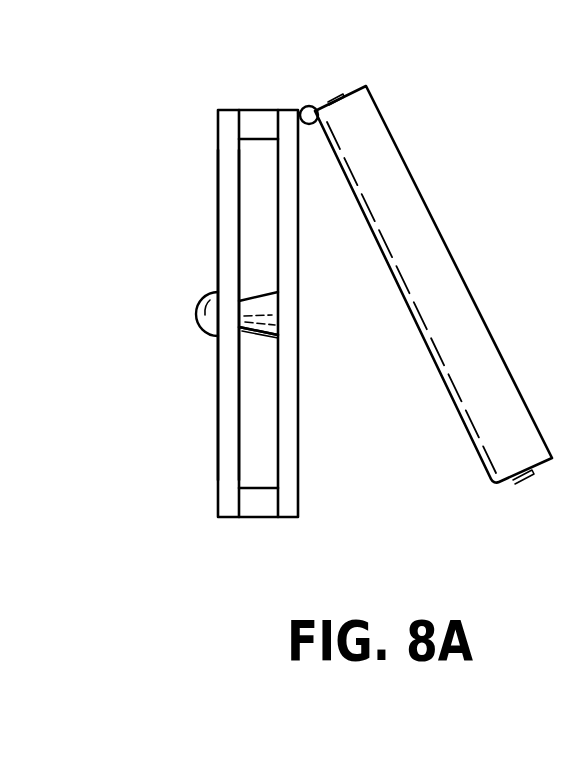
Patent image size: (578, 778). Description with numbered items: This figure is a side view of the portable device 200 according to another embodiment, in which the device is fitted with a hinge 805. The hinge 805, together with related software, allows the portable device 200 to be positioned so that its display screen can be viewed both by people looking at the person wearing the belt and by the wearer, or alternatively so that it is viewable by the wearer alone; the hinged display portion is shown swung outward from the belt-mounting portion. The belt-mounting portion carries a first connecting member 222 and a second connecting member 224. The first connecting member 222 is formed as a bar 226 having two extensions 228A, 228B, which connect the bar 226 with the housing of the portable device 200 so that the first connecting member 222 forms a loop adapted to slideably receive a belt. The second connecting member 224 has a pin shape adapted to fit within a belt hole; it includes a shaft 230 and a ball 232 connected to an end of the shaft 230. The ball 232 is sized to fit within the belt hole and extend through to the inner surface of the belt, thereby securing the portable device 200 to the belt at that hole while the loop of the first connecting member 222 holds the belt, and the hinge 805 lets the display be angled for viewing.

The portable device 200 is at (363, 102).
The first connecting member 222 is at (217, 187).
The second connecting member 224 is at (263, 340).
The bar 226 is at (227, 242).
The extension 228A is at (255, 118).
The extension 228B is at (255, 503).
The shaft 230 is at (264, 305).
The ball 232 is at (198, 316).
The hinge 805 is at (310, 106).